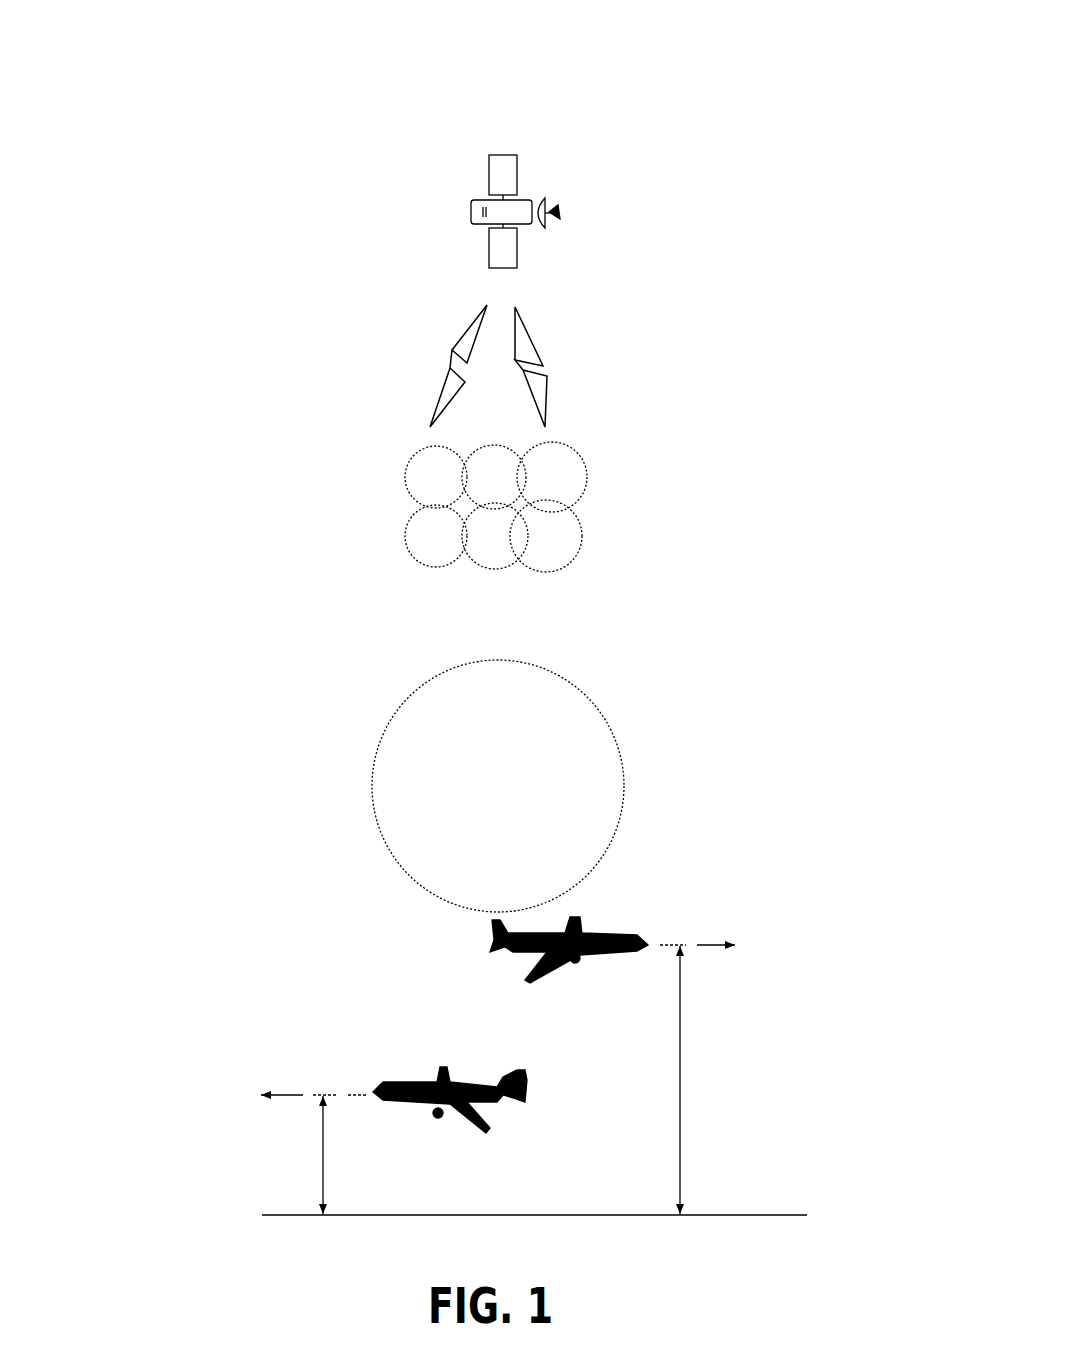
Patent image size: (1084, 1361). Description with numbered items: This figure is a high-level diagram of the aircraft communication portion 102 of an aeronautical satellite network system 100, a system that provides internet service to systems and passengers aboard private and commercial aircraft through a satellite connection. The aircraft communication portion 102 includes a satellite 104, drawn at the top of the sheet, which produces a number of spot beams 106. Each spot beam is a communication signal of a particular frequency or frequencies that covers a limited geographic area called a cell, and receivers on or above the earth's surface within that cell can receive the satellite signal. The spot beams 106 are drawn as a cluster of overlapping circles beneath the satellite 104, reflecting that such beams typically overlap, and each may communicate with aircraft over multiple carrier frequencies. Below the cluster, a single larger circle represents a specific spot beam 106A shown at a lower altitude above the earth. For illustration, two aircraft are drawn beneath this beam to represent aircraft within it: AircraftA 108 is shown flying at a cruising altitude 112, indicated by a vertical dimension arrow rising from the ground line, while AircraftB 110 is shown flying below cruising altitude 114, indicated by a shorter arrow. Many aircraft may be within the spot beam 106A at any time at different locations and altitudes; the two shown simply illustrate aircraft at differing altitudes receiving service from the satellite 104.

The aeronautical satellite network system 100 is at (739, 59).
The aircraft communication portion 102 is at (767, 126).
The satellite 104 is at (534, 169).
The spot beams 106 is at (397, 459).
The spot beam 106A is at (518, 838).
The AircraftA 108 is at (674, 910).
The AircraftB 110 is at (371, 1051).
The cruising altitude 112 is at (681, 1037).
The below cruising altitude 114 is at (323, 1162).